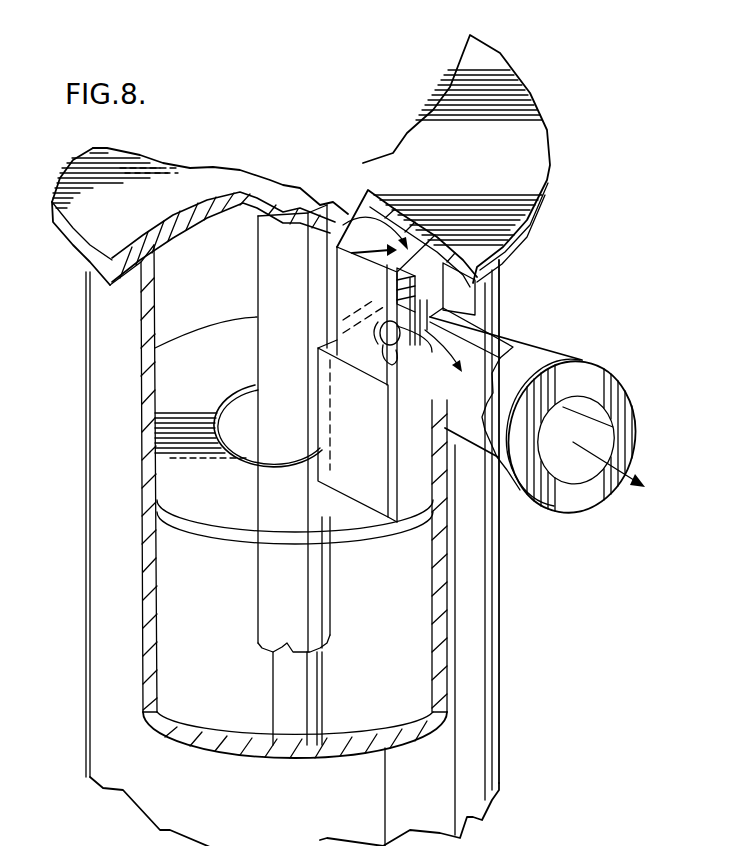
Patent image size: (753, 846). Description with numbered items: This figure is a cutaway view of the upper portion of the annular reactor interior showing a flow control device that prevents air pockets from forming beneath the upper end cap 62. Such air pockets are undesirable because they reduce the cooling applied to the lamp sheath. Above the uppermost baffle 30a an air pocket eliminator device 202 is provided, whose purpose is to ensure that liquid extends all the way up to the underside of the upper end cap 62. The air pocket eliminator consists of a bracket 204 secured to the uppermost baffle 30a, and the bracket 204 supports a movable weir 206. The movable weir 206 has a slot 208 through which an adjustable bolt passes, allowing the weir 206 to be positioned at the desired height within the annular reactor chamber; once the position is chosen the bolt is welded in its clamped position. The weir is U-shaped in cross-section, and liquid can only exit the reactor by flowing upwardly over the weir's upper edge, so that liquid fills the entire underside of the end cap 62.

The upper end cap 62 is at (288, 166).
The uppermost baffle 30a is at (292, 545).
The air pocket eliminator device 202 is at (294, 475).
The bracket 204 is at (372, 425).
The movable weir 206 is at (366, 220).
The slot 208 is at (410, 378).